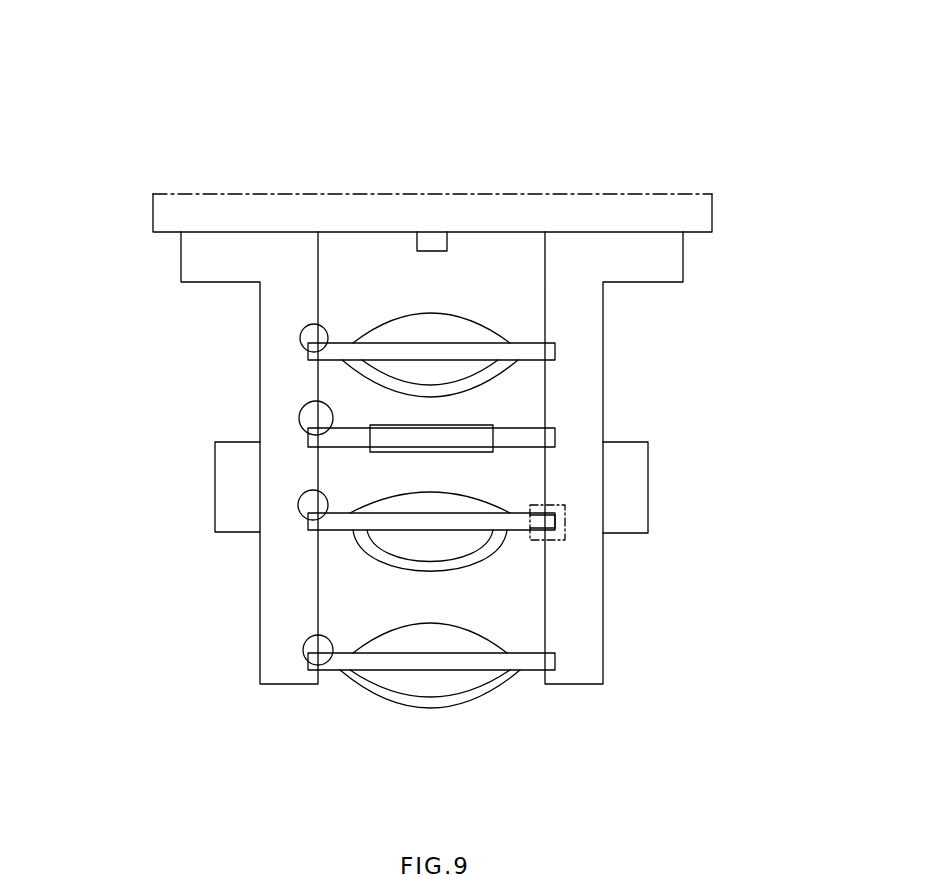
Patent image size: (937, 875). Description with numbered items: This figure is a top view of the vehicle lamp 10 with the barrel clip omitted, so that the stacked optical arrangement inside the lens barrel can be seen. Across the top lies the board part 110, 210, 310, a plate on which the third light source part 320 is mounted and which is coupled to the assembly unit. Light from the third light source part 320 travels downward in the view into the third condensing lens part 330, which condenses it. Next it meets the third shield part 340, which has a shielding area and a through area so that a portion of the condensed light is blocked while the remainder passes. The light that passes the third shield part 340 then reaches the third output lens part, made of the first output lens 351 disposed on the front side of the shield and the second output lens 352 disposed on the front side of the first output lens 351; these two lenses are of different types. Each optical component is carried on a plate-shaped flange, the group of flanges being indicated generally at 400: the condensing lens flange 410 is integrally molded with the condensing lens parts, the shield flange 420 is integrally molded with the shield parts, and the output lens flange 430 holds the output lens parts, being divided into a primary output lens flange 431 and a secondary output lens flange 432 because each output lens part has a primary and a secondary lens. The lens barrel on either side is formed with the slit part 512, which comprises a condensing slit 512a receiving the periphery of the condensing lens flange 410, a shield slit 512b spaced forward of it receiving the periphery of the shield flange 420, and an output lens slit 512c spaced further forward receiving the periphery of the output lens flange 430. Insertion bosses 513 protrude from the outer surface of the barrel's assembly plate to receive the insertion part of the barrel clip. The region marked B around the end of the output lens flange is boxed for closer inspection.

The camera module 10 is at (118, 39).
The board part 110 is at (432, 183).
The board part 210 is at (432, 183).
The board part 310 is at (272, 210).
The third light source part 320 is at (430, 243).
The third condensing lens part 330 is at (433, 328).
The third shield part 340 is at (433, 425).
The (3-1)-th lens 351 is at (428, 502).
The (3-2)-th lens 352 is at (432, 700).
The lens holder 400 is at (700, 317).
The condensing lens flange 410 is at (545, 352).
The shield flange 420 is at (555, 430).
The output lens flange 430 is at (541, 592).
The primary output lens flange 431 is at (550, 522).
The secondary output lens flange 432 is at (553, 660).
The slit part 512 is at (184, 490).
The condensing slit 512a is at (300, 338).
The shield slit 512b is at (299, 416).
The output lens slit 512c is at (298, 500).
The insertion boss 513 is at (227, 493).
The detail region B is at (565, 517).